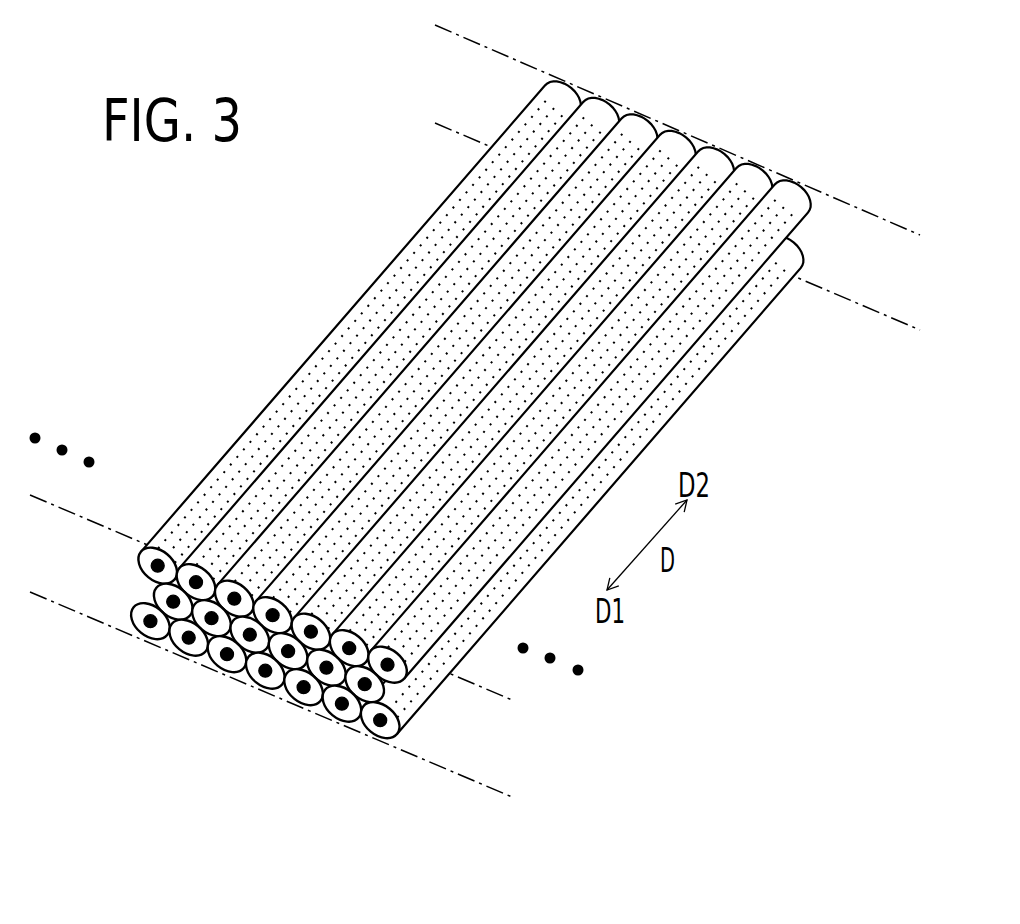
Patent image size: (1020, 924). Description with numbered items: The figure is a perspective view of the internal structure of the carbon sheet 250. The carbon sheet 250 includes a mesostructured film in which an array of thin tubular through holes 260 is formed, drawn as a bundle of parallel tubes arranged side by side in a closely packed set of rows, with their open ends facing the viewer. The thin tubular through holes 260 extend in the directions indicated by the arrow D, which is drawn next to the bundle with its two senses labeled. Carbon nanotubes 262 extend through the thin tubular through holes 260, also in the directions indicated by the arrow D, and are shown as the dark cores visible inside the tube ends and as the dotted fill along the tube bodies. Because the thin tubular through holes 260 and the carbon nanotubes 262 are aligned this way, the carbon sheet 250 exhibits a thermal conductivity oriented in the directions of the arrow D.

The carbon sheet 250 is at (472, 413).
The thin tubular through holes 260 is at (472, 413).
The carbon nanotubes 262 is at (266, 431).